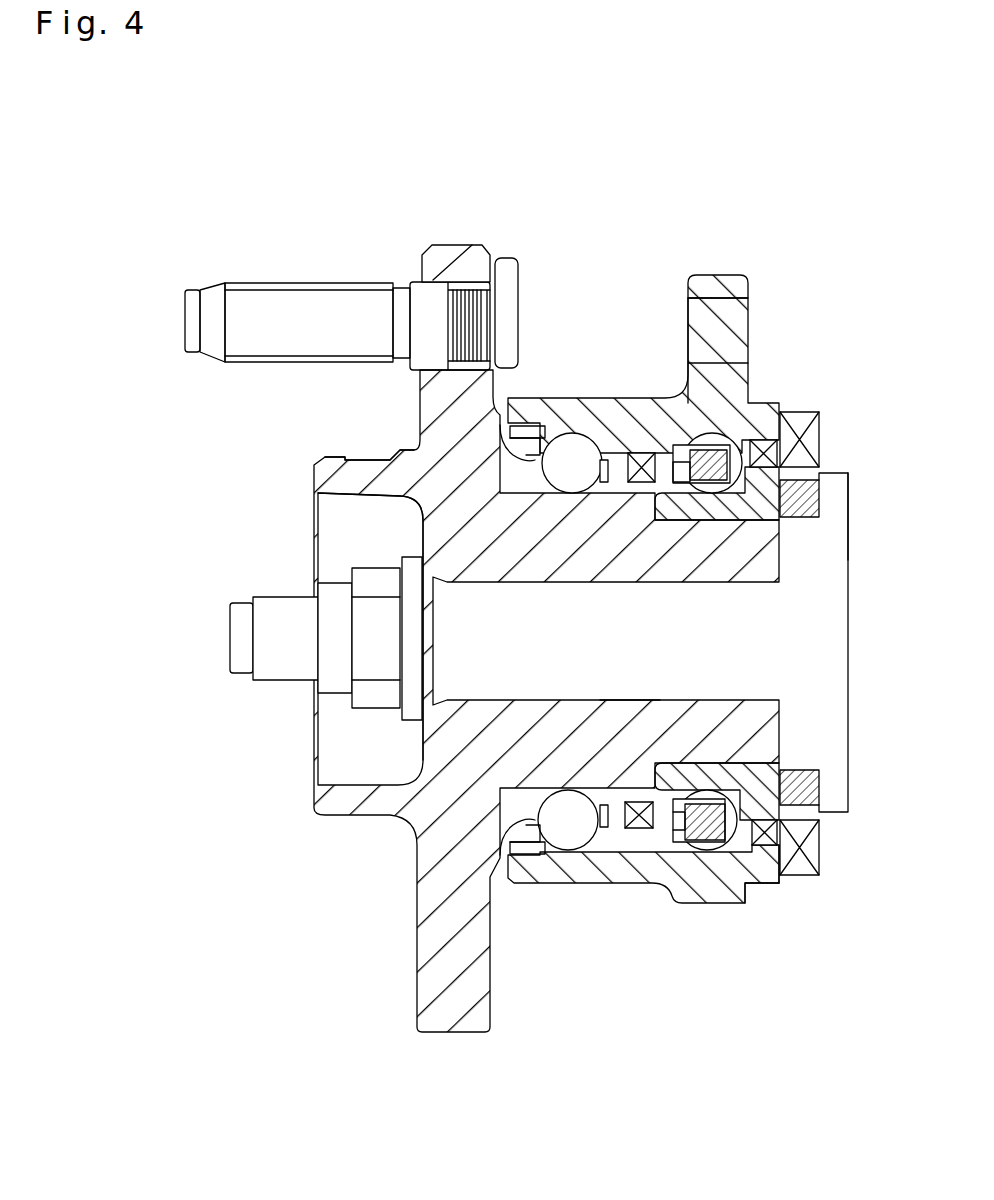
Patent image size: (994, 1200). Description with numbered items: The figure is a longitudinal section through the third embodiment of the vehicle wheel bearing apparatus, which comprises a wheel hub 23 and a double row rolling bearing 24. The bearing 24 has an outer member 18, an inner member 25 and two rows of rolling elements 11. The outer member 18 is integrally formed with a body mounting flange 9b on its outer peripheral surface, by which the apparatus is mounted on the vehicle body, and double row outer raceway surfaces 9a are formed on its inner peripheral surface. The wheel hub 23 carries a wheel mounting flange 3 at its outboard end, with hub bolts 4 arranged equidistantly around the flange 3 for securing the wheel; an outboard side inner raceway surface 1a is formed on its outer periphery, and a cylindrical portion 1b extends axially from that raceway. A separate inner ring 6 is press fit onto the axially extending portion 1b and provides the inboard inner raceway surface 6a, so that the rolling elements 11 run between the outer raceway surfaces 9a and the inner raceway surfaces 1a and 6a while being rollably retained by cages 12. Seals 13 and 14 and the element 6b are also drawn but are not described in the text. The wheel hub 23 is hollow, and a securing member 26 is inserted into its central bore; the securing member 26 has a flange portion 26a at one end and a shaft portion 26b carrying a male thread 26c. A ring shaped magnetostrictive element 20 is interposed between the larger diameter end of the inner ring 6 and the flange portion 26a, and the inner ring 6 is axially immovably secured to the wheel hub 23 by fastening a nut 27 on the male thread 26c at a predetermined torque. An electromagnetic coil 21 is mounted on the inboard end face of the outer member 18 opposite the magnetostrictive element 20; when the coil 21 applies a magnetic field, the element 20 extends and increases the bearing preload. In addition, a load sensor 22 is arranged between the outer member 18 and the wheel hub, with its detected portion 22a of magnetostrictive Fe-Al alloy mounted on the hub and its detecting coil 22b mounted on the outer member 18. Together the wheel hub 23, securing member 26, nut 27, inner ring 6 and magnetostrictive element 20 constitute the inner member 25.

The outboard side inner raceway surface 1a is at (457, 540).
The cylindrical portion 1b is at (722, 507).
The wheel mounting flange 3 is at (458, 243).
The hub bolts 4 is at (307, 290).
The inner ring 6 is at (762, 846).
The inner raceway surface 6a is at (756, 885).
The outer ring flange seal portion 6b is at (818, 850).
The outer raceway surfaces 9a is at (563, 438).
The body mounting flange 9b is at (727, 282).
The rolling elements 11 is at (575, 836).
The cages 12 is at (620, 822).
The seal 13 is at (520, 868).
The seal groove 14 is at (773, 880).
The outer member 18 is at (583, 395).
The magnetostrictive element 20 is at (828, 483).
The electromagnetic coil 21 is at (805, 420).
The load sensor 22 is at (657, 391).
The detected portion 22a is at (615, 452).
The detecting coil 22b is at (650, 450).
The wheel hub 23 is at (377, 460).
The double row rolling bearing 24 is at (655, 292).
The inner member 25 is at (408, 518).
The securing member 26 is at (805, 642).
The flange portion 26a is at (818, 557).
The shaft portion 26b is at (626, 711).
The male thread 26c is at (277, 672).
The nut 27 is at (337, 692).